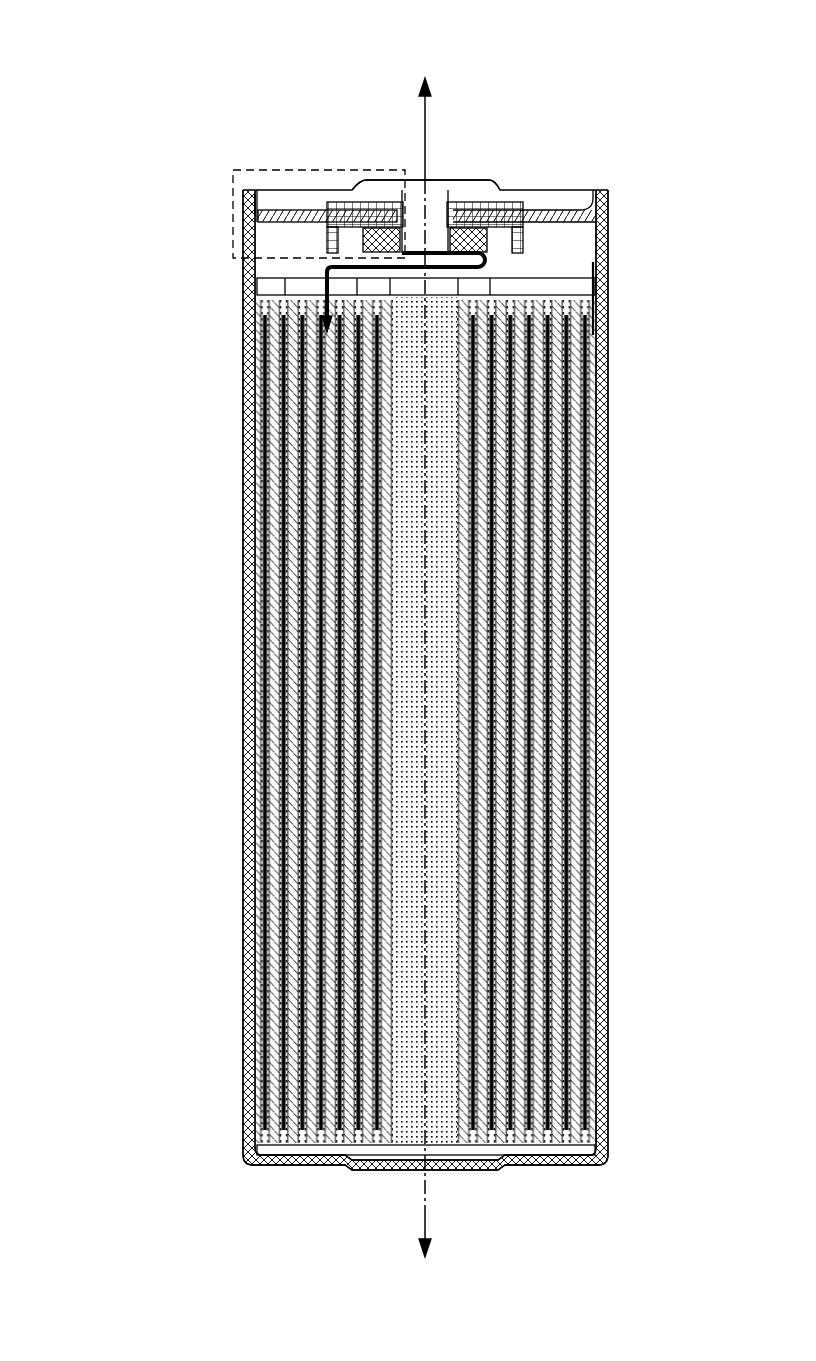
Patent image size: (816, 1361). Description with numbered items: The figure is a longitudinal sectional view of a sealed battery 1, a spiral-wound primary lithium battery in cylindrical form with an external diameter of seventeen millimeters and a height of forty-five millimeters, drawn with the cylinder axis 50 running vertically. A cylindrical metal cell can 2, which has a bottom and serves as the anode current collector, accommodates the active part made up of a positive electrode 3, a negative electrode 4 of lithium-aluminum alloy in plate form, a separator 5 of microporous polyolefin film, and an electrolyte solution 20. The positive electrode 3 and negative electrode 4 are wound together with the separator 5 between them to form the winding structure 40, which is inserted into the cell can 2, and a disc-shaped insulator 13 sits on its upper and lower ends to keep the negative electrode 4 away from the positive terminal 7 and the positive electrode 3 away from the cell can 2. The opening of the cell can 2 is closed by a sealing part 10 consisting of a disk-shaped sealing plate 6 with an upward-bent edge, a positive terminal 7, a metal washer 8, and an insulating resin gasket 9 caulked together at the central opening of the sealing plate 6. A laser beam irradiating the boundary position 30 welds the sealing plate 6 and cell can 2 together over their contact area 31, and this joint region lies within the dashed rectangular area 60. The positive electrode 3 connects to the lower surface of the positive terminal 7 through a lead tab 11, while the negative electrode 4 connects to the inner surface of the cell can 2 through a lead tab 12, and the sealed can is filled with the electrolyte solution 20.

The sealed battery 1 is at (140, 90).
The cell can 2 is at (247, 583).
The positive electrode 3 is at (262, 822).
The negative electrode 4 is at (262, 857).
The separator 5 is at (262, 880).
The sealing plate 6 is at (292, 208).
The positive terminal 7 is at (373, 182).
The washer 8 is at (404, 238).
The gasket 9 is at (338, 200).
The sealing part 10 is at (395, 62).
The lead tab 11 is at (325, 268).
The lead tab 12 is at (598, 300).
The insulator 13 is at (262, 289).
The electrolyte solution 20 is at (403, 448).
The laser irradiation position 30 is at (250, 191).
The contact area 31 is at (250, 200).
The winding structure 40 is at (140, 828).
The cylinder axis 50 is at (432, 178).
The rectangular area 60 is at (233, 205).